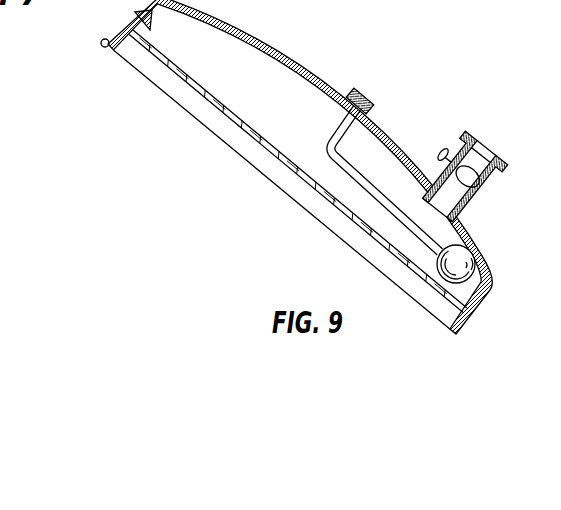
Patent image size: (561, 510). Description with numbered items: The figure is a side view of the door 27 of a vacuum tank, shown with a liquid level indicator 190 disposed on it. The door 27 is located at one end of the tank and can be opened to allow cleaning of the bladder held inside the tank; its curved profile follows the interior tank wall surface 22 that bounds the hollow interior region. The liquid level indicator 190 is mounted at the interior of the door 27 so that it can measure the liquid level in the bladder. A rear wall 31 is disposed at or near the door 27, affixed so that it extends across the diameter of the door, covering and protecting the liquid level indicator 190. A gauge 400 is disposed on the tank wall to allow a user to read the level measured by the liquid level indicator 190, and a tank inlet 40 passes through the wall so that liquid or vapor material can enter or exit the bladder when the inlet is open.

The door 27 is at (297, 57).
The rear wall 31 is at (300, 167).
The interior tank wall surface 22 is at (390, 152).
The gauges 400 is at (363, 89).
The liquid level indicator 190 is at (481, 251).
The tank inlet 40 is at (487, 150).